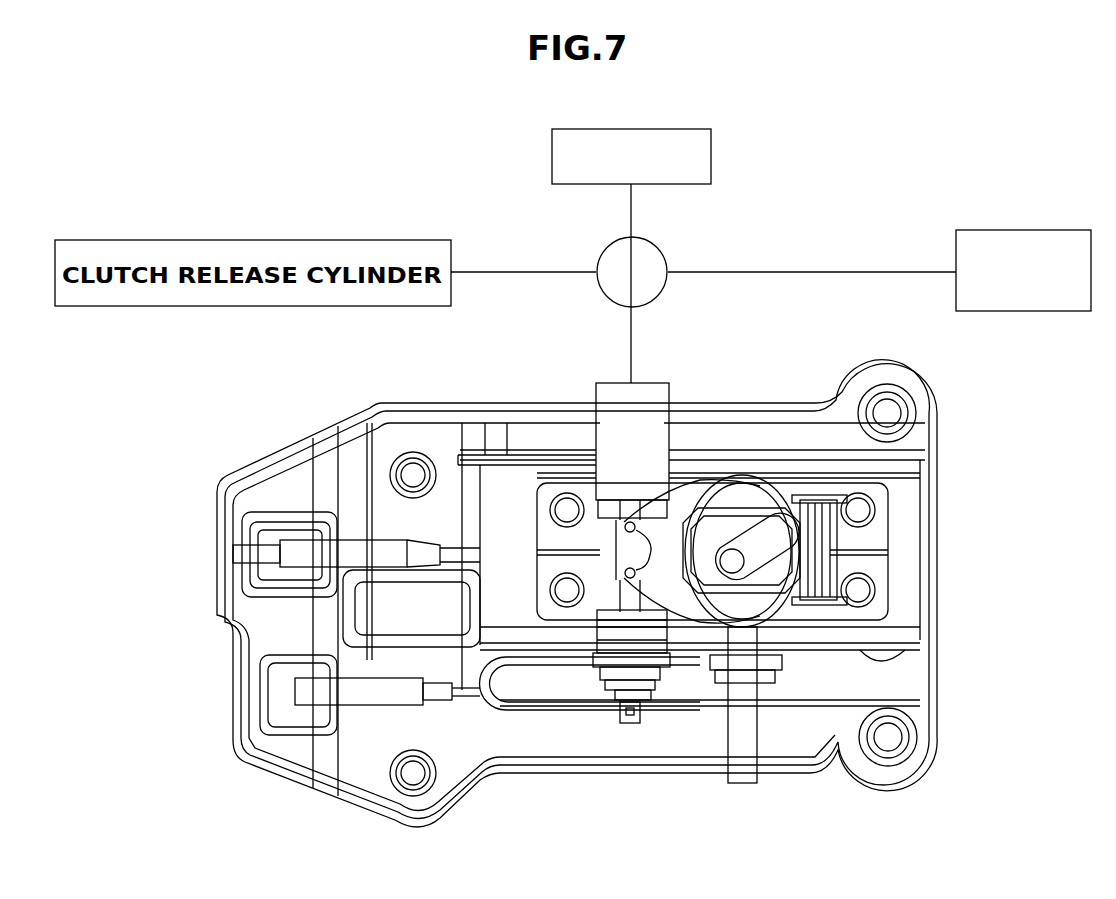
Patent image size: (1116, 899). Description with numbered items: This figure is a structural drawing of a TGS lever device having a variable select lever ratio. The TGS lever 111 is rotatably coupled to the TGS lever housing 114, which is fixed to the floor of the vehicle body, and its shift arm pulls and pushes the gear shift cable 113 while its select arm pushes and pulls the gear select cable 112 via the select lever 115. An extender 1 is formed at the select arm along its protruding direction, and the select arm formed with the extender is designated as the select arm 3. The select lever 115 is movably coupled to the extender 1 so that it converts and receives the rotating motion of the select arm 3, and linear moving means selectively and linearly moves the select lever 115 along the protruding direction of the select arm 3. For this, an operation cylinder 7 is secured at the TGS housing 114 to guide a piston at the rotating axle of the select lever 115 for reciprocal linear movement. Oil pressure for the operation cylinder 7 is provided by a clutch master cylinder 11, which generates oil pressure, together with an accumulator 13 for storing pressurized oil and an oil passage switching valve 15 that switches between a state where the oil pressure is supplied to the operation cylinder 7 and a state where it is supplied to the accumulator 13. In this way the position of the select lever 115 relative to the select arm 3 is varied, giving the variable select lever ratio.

The accumulator 13 is at (552, 158).
The clutch master cylinder 11 is at (1022, 230).
The oil passage switching valve 15 is at (648, 255).
The operation cylinder 7 is at (655, 392).
The TGS lever housing 114 is at (413, 437).
The gear shift cable 113 is at (260, 552).
The gear select cable 112 is at (305, 692).
The TGS lever 111 is at (770, 540).
The select lever 115 is at (668, 660).
The select arm 3 is at (743, 770).
The extender 1 is at (775, 690).